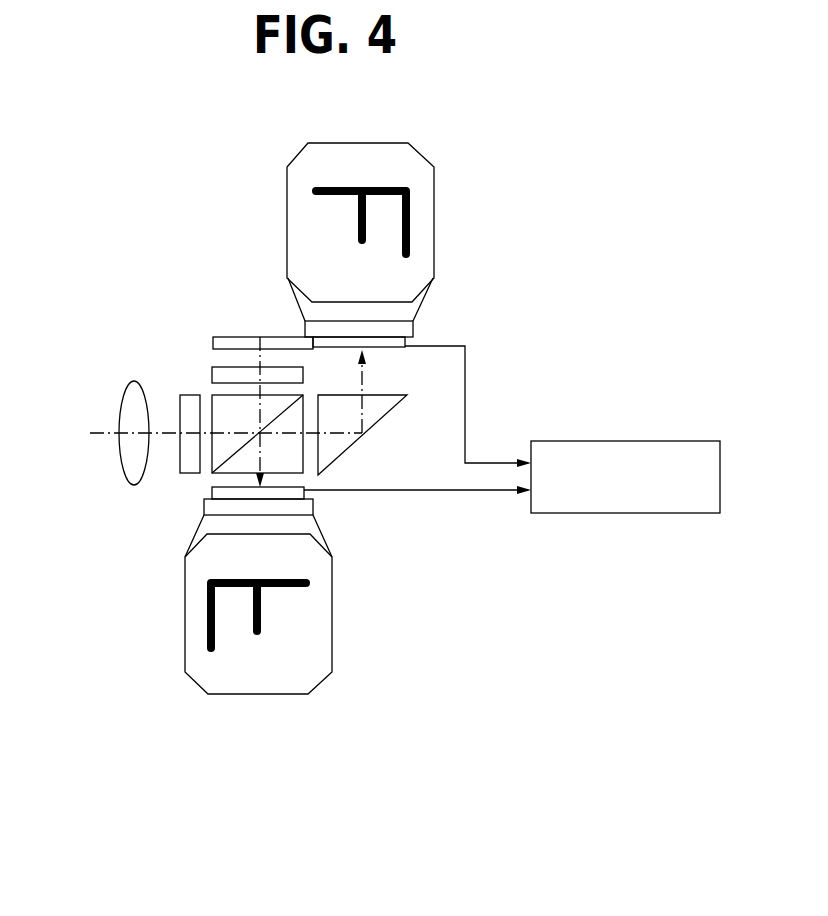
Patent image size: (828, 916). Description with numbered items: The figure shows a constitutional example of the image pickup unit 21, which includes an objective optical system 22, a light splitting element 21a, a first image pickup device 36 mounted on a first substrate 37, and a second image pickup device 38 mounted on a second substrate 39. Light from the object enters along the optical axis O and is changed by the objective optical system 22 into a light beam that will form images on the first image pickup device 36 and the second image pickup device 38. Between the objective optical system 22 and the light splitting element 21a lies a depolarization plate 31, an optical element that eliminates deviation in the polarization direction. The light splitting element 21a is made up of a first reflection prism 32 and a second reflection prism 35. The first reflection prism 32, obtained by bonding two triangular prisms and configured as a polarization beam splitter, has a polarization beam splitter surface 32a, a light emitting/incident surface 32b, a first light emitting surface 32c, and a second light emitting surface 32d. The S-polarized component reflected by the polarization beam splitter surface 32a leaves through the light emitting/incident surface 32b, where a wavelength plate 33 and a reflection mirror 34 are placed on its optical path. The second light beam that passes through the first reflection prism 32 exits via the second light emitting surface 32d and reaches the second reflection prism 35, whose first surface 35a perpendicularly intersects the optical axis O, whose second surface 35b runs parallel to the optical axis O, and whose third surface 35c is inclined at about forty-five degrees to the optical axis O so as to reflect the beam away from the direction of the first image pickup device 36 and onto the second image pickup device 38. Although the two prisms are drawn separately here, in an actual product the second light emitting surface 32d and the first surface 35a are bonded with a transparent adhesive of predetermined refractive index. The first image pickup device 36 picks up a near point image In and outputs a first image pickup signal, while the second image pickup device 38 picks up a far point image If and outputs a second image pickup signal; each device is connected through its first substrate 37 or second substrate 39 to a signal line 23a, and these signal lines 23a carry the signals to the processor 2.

The processor 2 is at (627, 440).
The image pickup unit 21 is at (189, 322).
The light splitting element 21a is at (290, 437).
The objective optical system 22 is at (133, 383).
The signal line 23a is at (485, 463).
The depolarization plate 31 is at (187, 400).
The first reflection prism 32 is at (220, 443).
The polarization beam splitter surface 32a is at (216, 470).
The light emitting/incident surface 32b is at (242, 397).
The first light emitting surface 32c is at (211, 486).
The second light emitting surface 32d is at (305, 488).
The wavelength plate 33 is at (232, 374).
The reflection mirror 34 is at (268, 343).
The second reflection prism 35 is at (388, 395).
The first surface 35a is at (318, 418).
The second surface 35b is at (352, 394).
The third surface 35c is at (385, 420).
The first image pickup device 36 is at (303, 475).
The first substrate 37 is at (312, 502).
The second image pickup device 38 is at (408, 343).
The second substrate 39 is at (417, 330).
The optical axis O is at (97, 424).
The far point image If is at (435, 186).
The near point image In is at (333, 657).